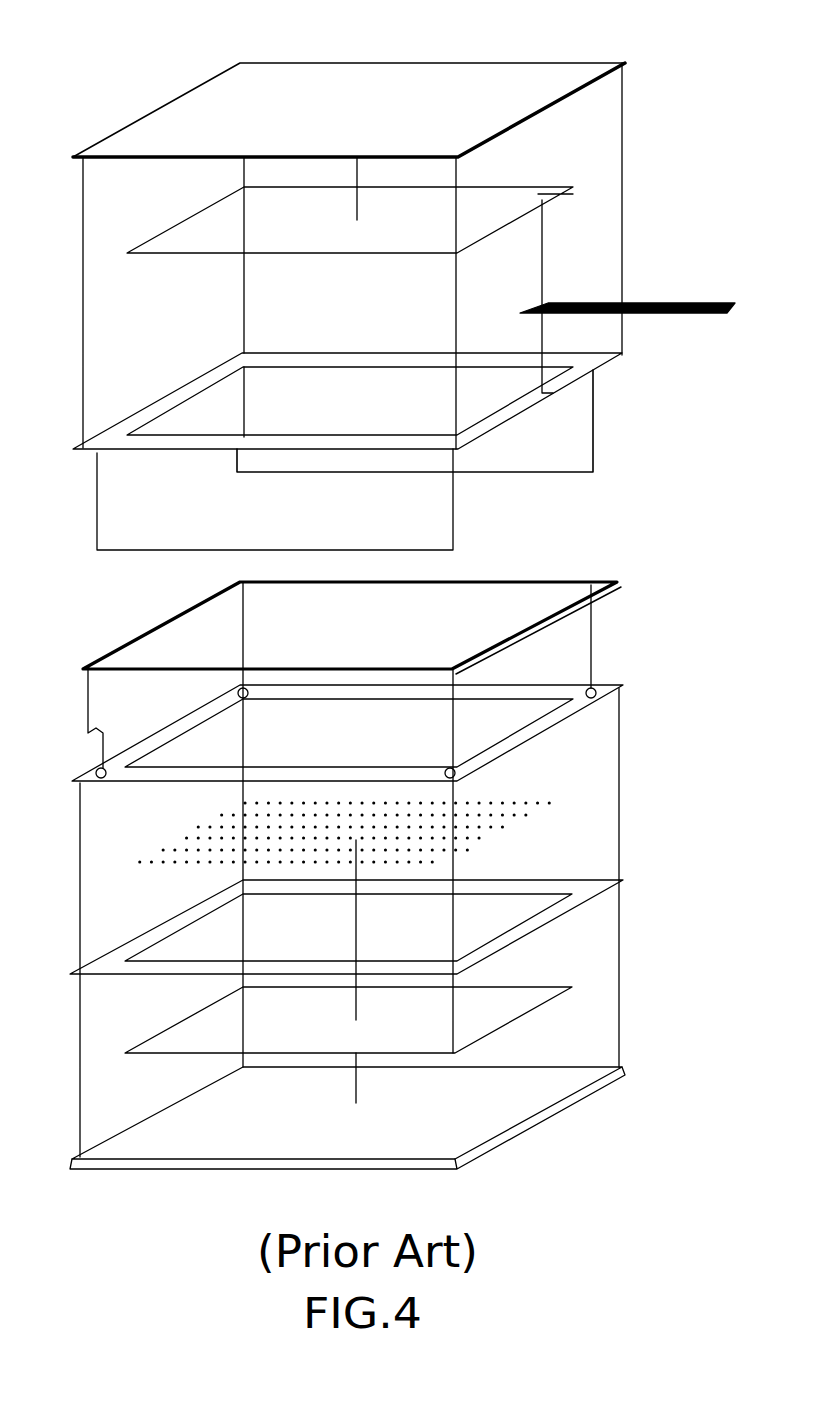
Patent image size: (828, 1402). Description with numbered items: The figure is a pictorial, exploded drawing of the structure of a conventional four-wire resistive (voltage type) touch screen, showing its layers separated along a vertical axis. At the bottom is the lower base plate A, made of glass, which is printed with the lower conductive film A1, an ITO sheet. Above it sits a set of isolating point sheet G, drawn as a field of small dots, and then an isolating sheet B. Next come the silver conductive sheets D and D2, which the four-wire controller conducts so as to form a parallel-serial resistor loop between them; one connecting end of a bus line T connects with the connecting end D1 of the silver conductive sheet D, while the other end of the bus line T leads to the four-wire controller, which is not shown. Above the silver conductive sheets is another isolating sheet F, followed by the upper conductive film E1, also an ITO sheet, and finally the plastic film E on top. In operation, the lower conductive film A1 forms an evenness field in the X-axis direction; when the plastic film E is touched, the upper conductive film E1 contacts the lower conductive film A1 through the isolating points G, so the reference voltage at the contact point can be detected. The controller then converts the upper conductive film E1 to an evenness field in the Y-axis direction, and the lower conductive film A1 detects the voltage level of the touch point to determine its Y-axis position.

The plastic film E is at (577, 77).
The upper conductive film E1 is at (573, 193).
The bus line T is at (678, 302).
The isolating sheet F is at (587, 362).
The silver conductive sheet D2 is at (567, 473).
The silver conductive sheet D is at (600, 582).
The connecting end D1 is at (547, 627).
The isolating sheet B is at (547, 722).
The isolating point sheet G is at (522, 815).
The lower conductive film A1 is at (530, 997).
The lower base plate A is at (552, 1095).